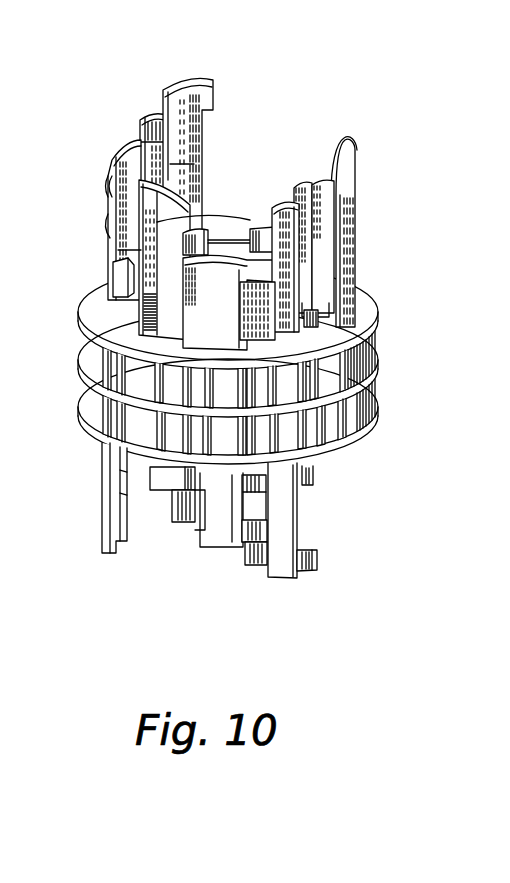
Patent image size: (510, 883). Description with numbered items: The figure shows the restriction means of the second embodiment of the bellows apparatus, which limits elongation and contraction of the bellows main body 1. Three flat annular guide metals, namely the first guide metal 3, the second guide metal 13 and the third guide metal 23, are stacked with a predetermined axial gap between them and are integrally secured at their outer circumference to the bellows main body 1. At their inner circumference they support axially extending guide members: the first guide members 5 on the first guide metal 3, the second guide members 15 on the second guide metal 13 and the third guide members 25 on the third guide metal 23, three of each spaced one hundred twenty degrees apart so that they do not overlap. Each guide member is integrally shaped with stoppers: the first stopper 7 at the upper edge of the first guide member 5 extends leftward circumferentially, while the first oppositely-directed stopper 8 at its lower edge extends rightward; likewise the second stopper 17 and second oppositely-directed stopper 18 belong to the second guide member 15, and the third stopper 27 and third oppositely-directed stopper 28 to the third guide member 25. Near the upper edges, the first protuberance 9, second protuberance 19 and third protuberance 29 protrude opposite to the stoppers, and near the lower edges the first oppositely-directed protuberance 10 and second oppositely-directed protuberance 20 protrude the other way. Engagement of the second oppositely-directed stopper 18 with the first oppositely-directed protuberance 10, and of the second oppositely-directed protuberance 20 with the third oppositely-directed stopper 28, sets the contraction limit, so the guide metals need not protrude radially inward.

The bellows main body 1 is at (226, 421).
The first guide metal 3 is at (90, 405).
The first guide member 5 is at (290, 282).
The first stopper 7 is at (103, 227).
The first oppositely-directed stopper 8 is at (312, 572).
The first protuberance 9 is at (118, 282).
The first oppositely-directed protuberance 10 is at (258, 555).
The second guide metal 13 is at (90, 352).
The second guide member 15 is at (331, 282).
The second stopper 17 is at (145, 130).
The second oppositely-directed stopper 18 is at (253, 532).
The second protuberance 19 is at (110, 178).
The second oppositely-directed protuberance 20 is at (188, 507).
The third guide metal 23 is at (85, 298).
The third guide member 25 is at (188, 270).
The third stopper 27 is at (204, 82).
The third oppositely-directed stopper 28 is at (181, 478).
The third protuberance 29 is at (160, 115).